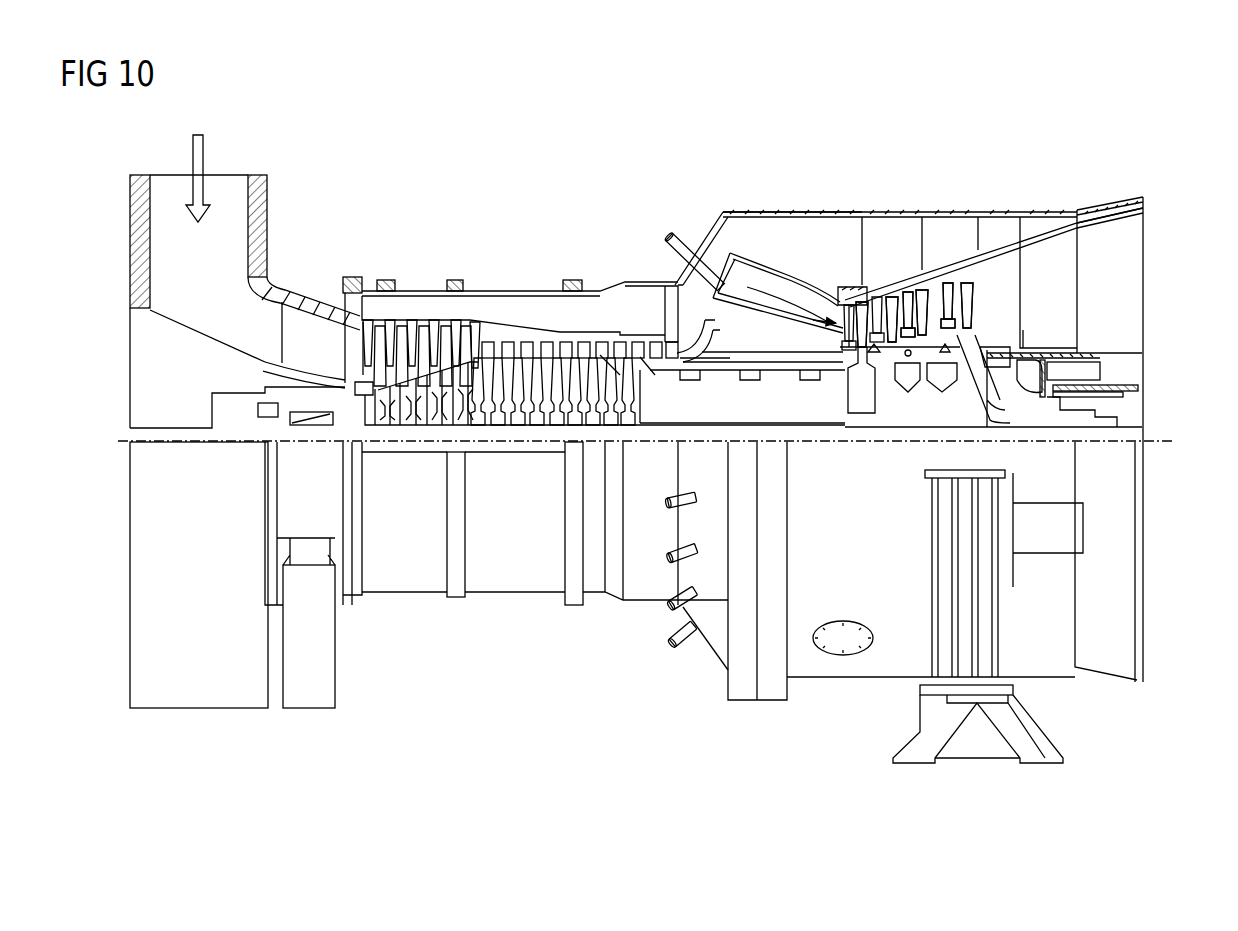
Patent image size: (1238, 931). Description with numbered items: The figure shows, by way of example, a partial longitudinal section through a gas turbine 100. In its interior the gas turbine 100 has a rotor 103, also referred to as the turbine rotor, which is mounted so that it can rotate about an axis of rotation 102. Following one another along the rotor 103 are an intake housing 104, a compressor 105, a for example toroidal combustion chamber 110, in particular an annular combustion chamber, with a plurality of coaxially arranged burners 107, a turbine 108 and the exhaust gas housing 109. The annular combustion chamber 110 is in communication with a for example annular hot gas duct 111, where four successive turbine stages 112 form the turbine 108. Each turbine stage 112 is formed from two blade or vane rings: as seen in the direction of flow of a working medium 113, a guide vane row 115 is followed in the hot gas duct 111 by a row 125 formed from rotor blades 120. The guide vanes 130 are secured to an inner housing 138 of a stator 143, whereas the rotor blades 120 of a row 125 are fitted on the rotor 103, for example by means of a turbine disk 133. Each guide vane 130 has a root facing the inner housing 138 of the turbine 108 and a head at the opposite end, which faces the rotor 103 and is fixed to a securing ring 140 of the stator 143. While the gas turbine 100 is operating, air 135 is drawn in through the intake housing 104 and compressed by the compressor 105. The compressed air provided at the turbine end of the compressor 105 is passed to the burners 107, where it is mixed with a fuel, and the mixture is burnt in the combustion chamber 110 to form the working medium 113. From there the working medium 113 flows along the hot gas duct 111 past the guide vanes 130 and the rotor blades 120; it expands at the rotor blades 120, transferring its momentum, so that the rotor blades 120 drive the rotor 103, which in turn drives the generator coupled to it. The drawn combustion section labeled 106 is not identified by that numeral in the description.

The gas turbine 100 is at (503, 185).
The axis of rotation 102 is at (118, 440).
The rotor 103 is at (693, 410).
The intake housing 104 is at (258, 230).
The compressor 105 is at (433, 275).
The combustion section 106 is at (808, 272).
The burners 107 is at (672, 238).
The turbine 108 is at (866, 185).
The exhaust gas housing 109 is at (1032, 235).
The combustion chamber 110 is at (740, 262).
The hot gas duct 111 is at (995, 290).
The turbine stages 112 is at (978, 185).
The working medium 113 is at (778, 282).
The guide vane row 115 is at (922, 295).
The rotor blades 120 is at (905, 330).
The row 125 is at (985, 300).
The guide vanes 130 is at (876, 330).
The turbine disk 133 is at (968, 407).
The air 135 is at (206, 165).
The inner housing 138 is at (876, 295).
The securing ring 140 is at (843, 335).
The stator 143 is at (832, 212).